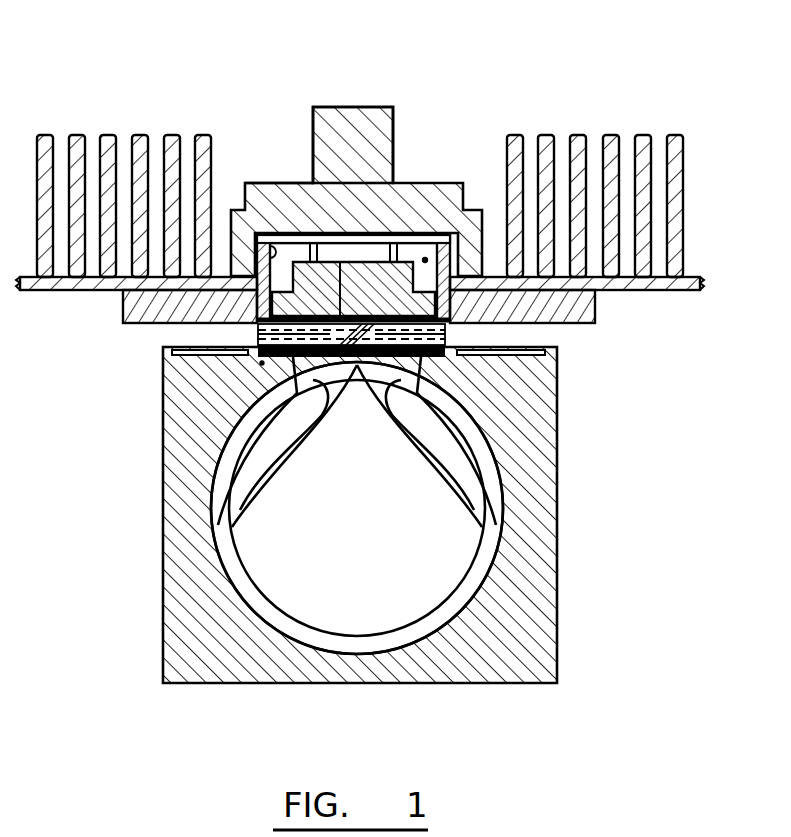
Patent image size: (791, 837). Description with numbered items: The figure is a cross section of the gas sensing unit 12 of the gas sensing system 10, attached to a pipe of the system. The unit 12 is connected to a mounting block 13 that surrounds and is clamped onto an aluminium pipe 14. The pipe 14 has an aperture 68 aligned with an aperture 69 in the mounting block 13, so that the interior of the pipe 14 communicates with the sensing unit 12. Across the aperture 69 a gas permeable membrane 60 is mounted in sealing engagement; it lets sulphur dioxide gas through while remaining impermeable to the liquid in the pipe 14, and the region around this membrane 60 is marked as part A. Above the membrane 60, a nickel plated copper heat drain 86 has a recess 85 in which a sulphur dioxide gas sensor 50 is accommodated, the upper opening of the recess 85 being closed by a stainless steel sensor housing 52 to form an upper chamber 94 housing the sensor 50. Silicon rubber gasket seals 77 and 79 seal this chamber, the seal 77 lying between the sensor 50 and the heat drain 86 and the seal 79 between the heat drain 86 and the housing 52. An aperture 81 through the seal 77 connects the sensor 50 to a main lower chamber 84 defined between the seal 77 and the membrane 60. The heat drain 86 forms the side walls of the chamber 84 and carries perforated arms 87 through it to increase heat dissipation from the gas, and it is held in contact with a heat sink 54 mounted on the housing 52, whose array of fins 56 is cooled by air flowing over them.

The gas sensing system 10 is at (595, 96).
The gas sensing unit 12 is at (315, 93).
The mounting block 13 is at (555, 509).
The aluminium pipe 14 is at (460, 508).
The sulphur dioxide gas sensor 50 is at (363, 260).
The sensor housing 52 is at (273, 190).
The heat sink 54 is at (50, 290).
The heat dissipating fins 56 is at (76, 133).
The gas permeable membrane 60 is at (451, 520).
The aperture 68 is at (305, 430).
The aperture 69 is at (524, 442).
The gasket seal 77 is at (450, 322).
The gasket seal 79 is at (457, 232).
The aperture 81 is at (344, 260).
The lower chamber 84 is at (174, 499).
The recess 85 is at (245, 186).
The heat drain 86 is at (595, 307).
The perforated arms 87 is at (432, 393).
The upper chamber 94 is at (425, 258).
The part A is at (260, 363).